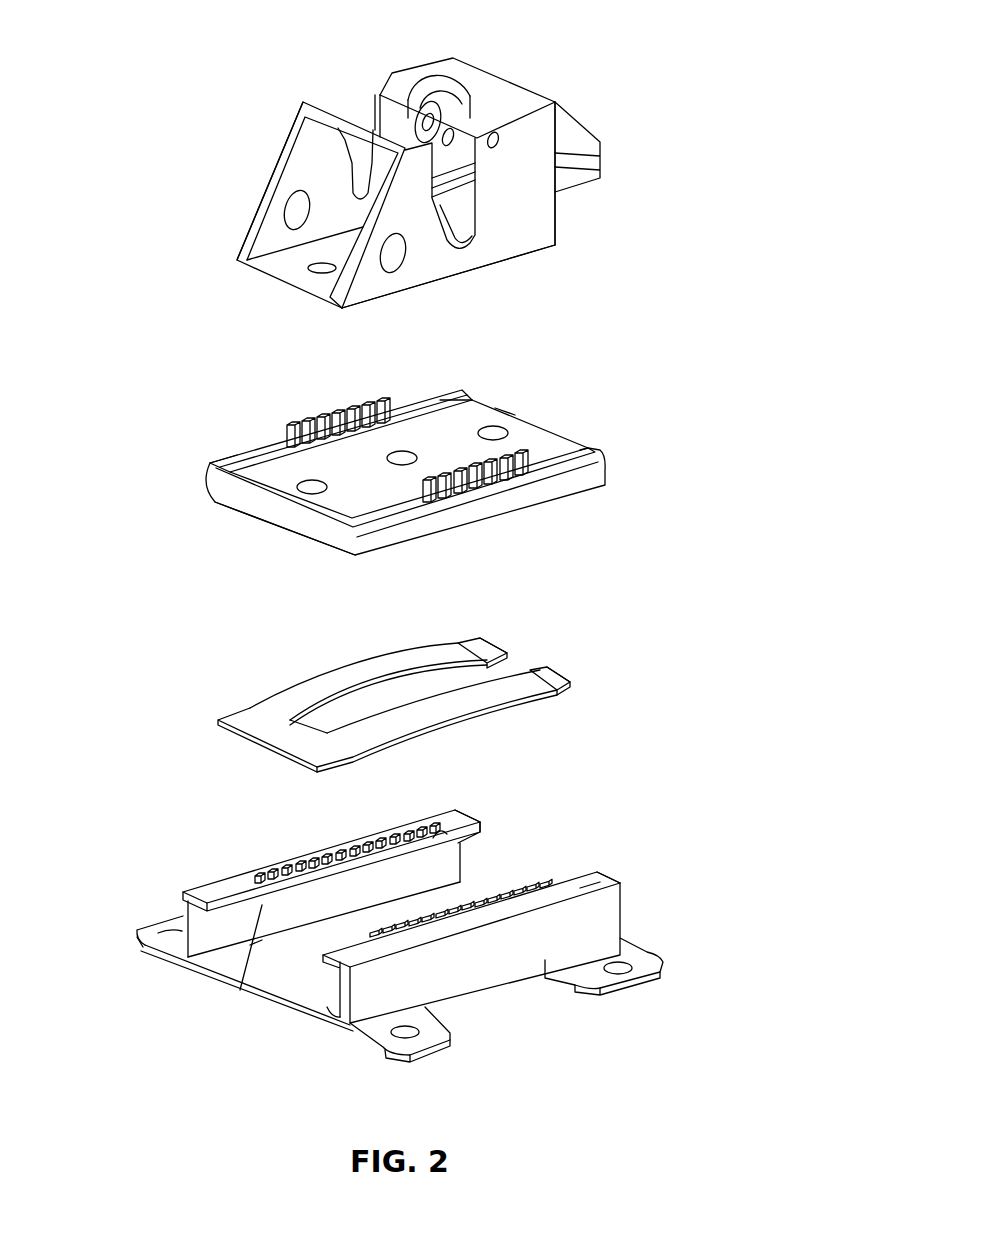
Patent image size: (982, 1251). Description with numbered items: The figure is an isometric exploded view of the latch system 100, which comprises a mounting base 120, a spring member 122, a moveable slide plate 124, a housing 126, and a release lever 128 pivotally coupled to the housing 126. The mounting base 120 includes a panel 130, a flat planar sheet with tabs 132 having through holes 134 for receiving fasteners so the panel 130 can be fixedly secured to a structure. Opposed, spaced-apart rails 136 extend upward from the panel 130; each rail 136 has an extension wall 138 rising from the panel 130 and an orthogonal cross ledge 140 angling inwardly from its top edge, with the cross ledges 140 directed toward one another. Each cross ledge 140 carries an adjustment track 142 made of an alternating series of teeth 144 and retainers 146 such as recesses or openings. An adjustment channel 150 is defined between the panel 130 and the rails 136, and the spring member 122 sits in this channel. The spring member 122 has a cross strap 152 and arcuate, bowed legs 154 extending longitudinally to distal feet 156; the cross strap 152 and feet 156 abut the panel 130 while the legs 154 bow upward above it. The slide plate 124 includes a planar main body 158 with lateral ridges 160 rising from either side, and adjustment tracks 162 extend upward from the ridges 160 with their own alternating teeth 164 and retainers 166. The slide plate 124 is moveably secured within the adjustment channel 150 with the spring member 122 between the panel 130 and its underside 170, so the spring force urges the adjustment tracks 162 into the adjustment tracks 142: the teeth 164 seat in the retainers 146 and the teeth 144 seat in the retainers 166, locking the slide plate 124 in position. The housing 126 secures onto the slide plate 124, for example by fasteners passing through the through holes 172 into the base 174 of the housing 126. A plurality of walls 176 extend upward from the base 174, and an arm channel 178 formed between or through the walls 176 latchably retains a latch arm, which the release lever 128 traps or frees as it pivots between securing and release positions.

The latch system 100 is at (767, 13).
The mounting base 120 is at (128, 910).
The spring member 122 is at (205, 685).
The moveable slide plate 124 is at (213, 420).
The housing 126 is at (286, 128).
The release lever 128 is at (581, 108).
The panel 130 is at (310, 1020).
The tabs 132 is at (622, 990).
The through holes 134 is at (620, 966).
The opposed rails 136 is at (484, 822).
The extension wall 138 is at (140, 945).
The cross ledge 140 is at (190, 888).
The adjustment track 142 is at (525, 885).
The teeth 144 is at (245, 993).
The retainers 146 is at (435, 832).
The adjustment channel 150 is at (255, 945).
The cross strap 152 is at (268, 703).
The legs 154 is at (463, 642).
The distal feet 156 is at (505, 648).
The planar main body 158 is at (507, 410).
The lateral ridges 160 is at (437, 393).
The adjustment tracks 162 is at (389, 385).
The teeth 164 is at (308, 480).
The retainers 166 is at (347, 405).
The underside 170 is at (300, 530).
The through holes 172 is at (403, 450).
The base 174 is at (532, 252).
The walls 176 is at (265, 193).
The arm channel 178 is at (372, 84).